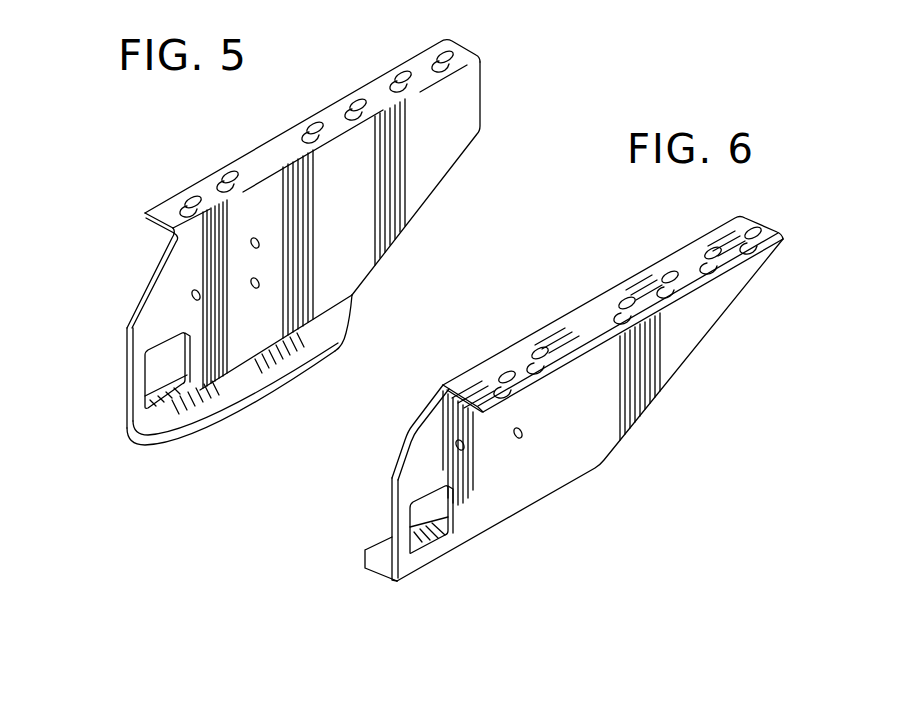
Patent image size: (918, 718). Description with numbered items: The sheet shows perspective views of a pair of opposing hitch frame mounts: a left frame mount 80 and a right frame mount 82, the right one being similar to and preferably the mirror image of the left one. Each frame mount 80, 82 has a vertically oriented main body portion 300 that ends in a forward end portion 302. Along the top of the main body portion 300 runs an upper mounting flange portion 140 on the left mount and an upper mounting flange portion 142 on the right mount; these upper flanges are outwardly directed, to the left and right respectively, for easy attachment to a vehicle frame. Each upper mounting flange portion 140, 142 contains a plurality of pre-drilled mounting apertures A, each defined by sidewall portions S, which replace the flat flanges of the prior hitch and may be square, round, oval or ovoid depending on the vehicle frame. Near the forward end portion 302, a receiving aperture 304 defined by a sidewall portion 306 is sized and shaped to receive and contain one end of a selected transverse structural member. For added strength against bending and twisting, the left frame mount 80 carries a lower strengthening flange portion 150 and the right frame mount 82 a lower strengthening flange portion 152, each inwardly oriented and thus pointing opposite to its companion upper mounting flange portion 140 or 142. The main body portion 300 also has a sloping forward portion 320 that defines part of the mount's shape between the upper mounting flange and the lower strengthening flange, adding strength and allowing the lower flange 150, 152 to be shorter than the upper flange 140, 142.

In FIG. 5, the left frame mount 80 is at (97, 202).
In FIG. 6, the right frame mount 82 is at (557, 301).
In FIG. 5, the upper mounting flange portion 140 is at (233, 168).
In FIG. 6, the upper mounting flange portion 142 is at (702, 270).
In FIG. 5, the main body portion 300 is at (343, 266).
In FIG. 6, the main body portion 300 is at (576, 447).
In FIG. 5, the sloping forward portion 320 is at (140, 295).
In FIG. 6, the sloping forward portion 320 is at (411, 425).
In FIG. 5, the forward end portion 302 is at (128, 376).
In FIG. 6, the forward end portion 302 is at (391, 506).
In FIG. 5, the receiving aperture 304 is at (163, 346).
In FIG. 6, the receiving aperture 304 is at (427, 497).
In FIG. 5, the sidewall portion 306 is at (160, 397).
In FIG. 6, the sidewall portion 306 is at (415, 555).
In FIG. 5, the lower strengthening flange portion 150 is at (165, 428).
In FIG. 6, the lower strengthening flange portion 152 is at (365, 570).
In FIG. 5, the pre-drilled mounting apertures A is at (175, 206).
In FIG. 6, the pre-drilled mounting apertures A is at (512, 372).
In FIG. 5, the sidewall portions S is at (185, 205).
In FIG. 6, the sidewall portions S is at (758, 238).